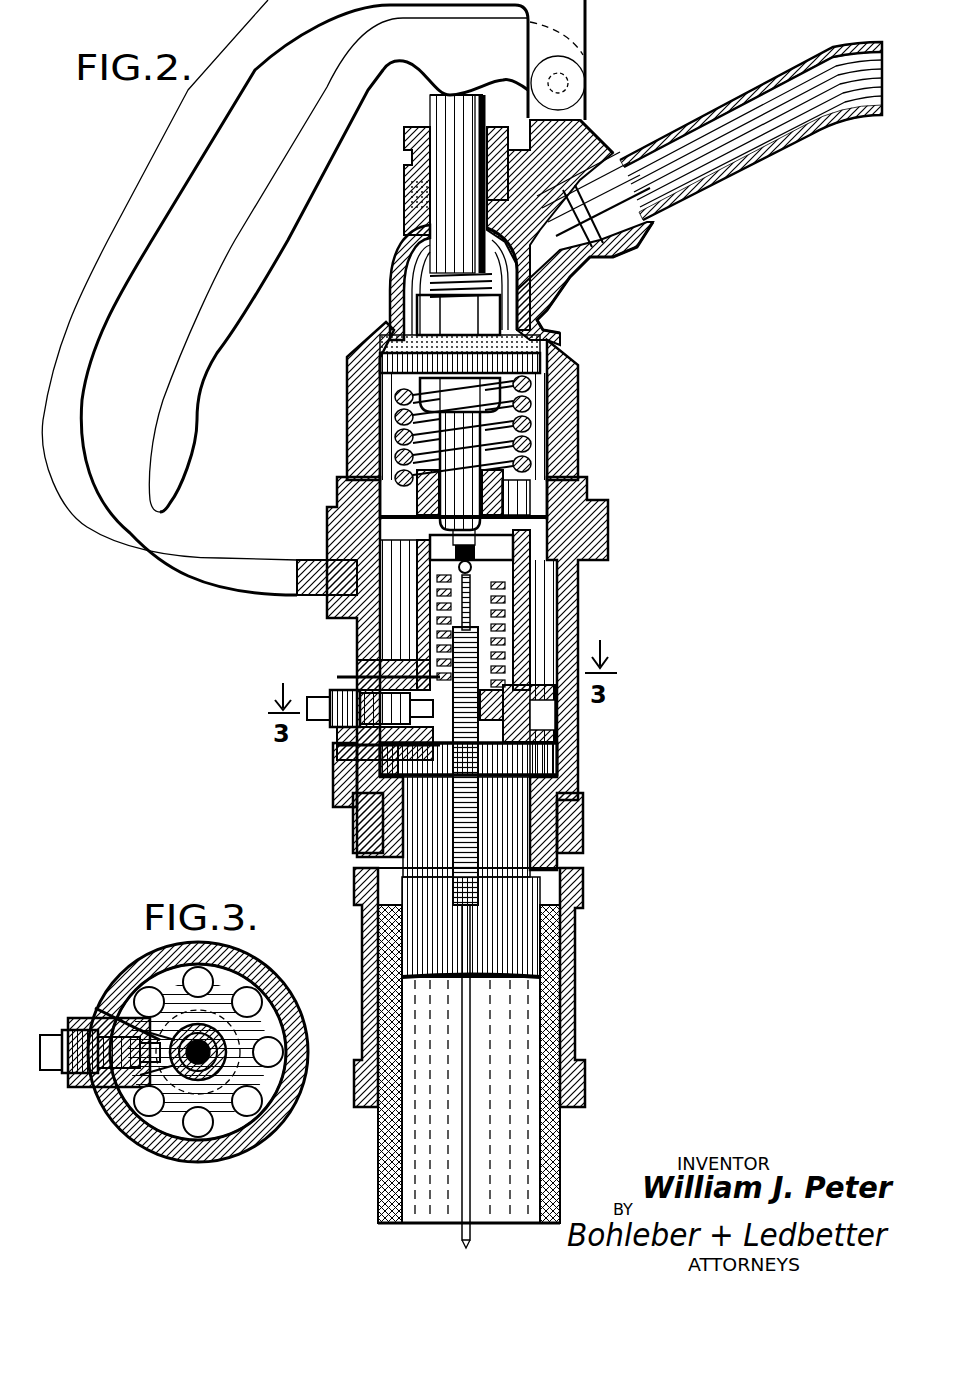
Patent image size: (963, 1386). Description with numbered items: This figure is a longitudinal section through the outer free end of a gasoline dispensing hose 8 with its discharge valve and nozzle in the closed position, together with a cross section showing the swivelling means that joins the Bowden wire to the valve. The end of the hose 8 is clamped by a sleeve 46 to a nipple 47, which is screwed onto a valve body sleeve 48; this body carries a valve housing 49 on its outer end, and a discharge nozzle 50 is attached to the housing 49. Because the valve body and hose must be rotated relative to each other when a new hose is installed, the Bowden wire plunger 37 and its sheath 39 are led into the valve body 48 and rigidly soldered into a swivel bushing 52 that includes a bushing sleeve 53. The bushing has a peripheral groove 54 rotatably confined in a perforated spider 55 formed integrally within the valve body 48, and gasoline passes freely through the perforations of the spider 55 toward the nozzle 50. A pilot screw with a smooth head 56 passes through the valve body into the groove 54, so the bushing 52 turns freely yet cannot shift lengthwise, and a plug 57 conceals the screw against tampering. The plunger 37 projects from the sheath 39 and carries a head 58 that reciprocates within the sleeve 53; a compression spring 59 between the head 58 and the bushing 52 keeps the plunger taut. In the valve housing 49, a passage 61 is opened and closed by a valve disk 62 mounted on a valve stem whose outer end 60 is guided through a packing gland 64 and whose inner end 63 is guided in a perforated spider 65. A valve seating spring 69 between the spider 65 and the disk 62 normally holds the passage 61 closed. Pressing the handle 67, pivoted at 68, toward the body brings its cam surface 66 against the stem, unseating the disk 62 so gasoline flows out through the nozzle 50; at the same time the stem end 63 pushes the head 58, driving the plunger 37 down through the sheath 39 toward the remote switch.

In FIG. 2, the flexible conduit 8 is at (565, 1155).
In FIG. 2, the Bowden wire plunger 37 is at (475, 585).
In FIG. 3, the Bowden wire plunger 37 is at (215, 1070).
In FIG. 2, the Bowden wire sheath 39 is at (453, 815).
In FIG. 3, the Bowden wire sheath 39 is at (210, 1075).
In FIG. 2, the sleeve 46 is at (585, 990).
In FIG. 2, the nipple 47 is at (585, 830).
In FIG. 2, the valve body sleeve 48 is at (583, 528).
In FIG. 3, the valve body sleeve 48 is at (115, 980).
In FIG. 2, the valve housing 49 is at (347, 368).
In FIG. 2, the discharge nozzle 50 is at (722, 150).
In FIG. 2, the swivel bushing 52 is at (430, 762).
In FIG. 3, the swivel bushing 52 is at (182, 1150).
In FIG. 2, the bushing sleeve 53 is at (525, 600).
In FIG. 2, the peripheral groove 54 is at (525, 712).
In FIG. 3, the peripheral groove 54 is at (166, 1120).
In FIG. 2, the spider 55 is at (545, 722).
In FIG. 3, the spider 55 is at (215, 1062).
In FIG. 2, the pilot screw 56 is at (410, 690).
In FIG. 3, the pilot screw 56 is at (150, 1098).
In FIG. 2, the plug 57 is at (330, 722).
In FIG. 3, the plug 57 is at (62, 1040).
In FIG. 2, the plunger head 58 is at (513, 548).
In FIG. 2, the compression spring 59 is at (490, 628).
In FIG. 2, the valve stem outer end 60 is at (447, 240).
In FIG. 2, the passage 61 is at (556, 330).
In FIG. 2, the valve disk 62 is at (392, 330).
In FIG. 2, the valve stem inner end 63 is at (455, 432).
In FIG. 2, the packing gland 64 is at (404, 168).
In FIG. 2, the perforated spider 65 is at (428, 512).
In FIG. 2, the cam surface 66 is at (466, 92).
In FIG. 2, the handle 67 is at (272, 192).
In FIG. 2, the pivot 68 is at (562, 83).
In FIG. 2, the valve seating spring 69 is at (528, 416).